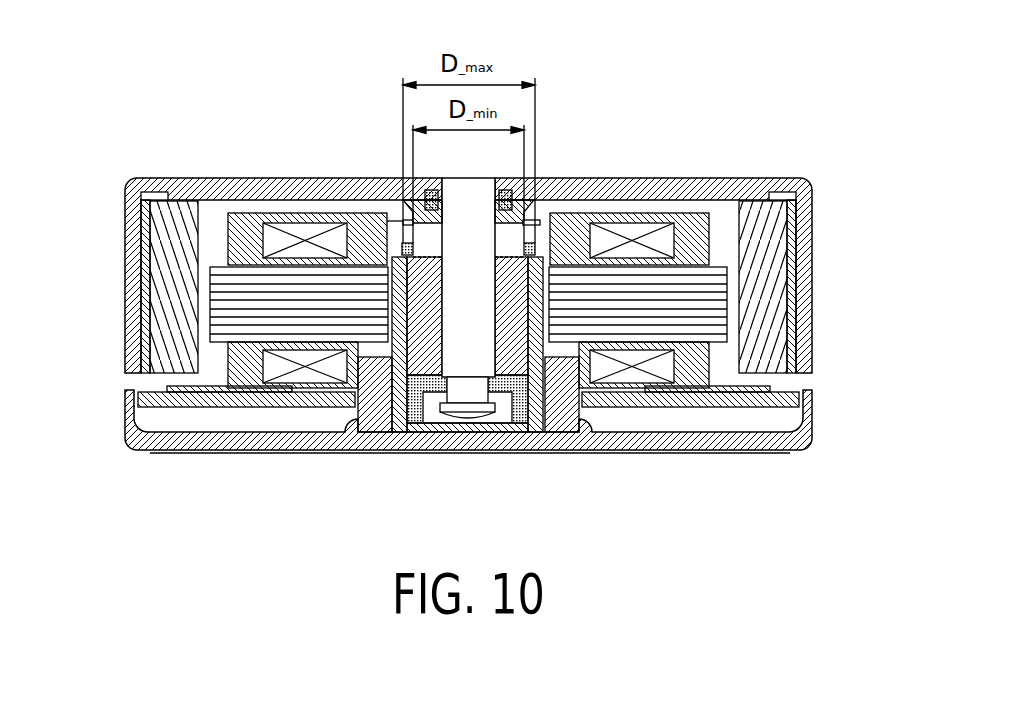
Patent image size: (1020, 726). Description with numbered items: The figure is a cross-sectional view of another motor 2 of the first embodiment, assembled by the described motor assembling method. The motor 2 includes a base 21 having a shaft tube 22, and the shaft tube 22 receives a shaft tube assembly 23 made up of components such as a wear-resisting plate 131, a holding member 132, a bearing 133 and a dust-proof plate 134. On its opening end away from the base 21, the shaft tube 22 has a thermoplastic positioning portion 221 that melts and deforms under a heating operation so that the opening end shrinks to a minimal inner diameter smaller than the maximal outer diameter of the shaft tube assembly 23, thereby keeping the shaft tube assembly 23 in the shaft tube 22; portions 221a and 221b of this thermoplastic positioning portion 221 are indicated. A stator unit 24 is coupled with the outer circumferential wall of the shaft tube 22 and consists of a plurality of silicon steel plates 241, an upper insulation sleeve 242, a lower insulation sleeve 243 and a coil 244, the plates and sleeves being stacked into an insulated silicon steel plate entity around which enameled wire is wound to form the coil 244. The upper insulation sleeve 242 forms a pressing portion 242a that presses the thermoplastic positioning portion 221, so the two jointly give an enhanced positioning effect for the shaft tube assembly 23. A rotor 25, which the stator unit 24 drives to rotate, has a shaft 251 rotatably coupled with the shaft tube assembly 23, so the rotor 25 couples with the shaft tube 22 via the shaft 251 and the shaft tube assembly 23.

The motor 2 is at (808, 95).
The base 21 is at (652, 452).
The shaft tube 22 is at (545, 298).
The thermoplastic positioning portion 221 is at (668, 110).
The hub washer 221a is at (537, 243).
The hub retaining ring 221b is at (540, 237).
The shaft tube assembly 23 is at (388, 232).
The stator unit 24 is at (420, 206).
The silicon steel plates 241 is at (207, 262).
The upper insulation sleeve 242 is at (236, 213).
The pressing portion 242a is at (541, 230).
The lower insulation sleeve 243 is at (235, 365).
The coil 244 is at (448, 233).
The rotor 25 is at (810, 230).
The shaft 251 is at (470, 367).
The wear-resisting plate 131 is at (427, 430).
The holding member 132 is at (522, 402).
The bearing 133 is at (421, 343).
The dust-proof plate 134 is at (384, 356).